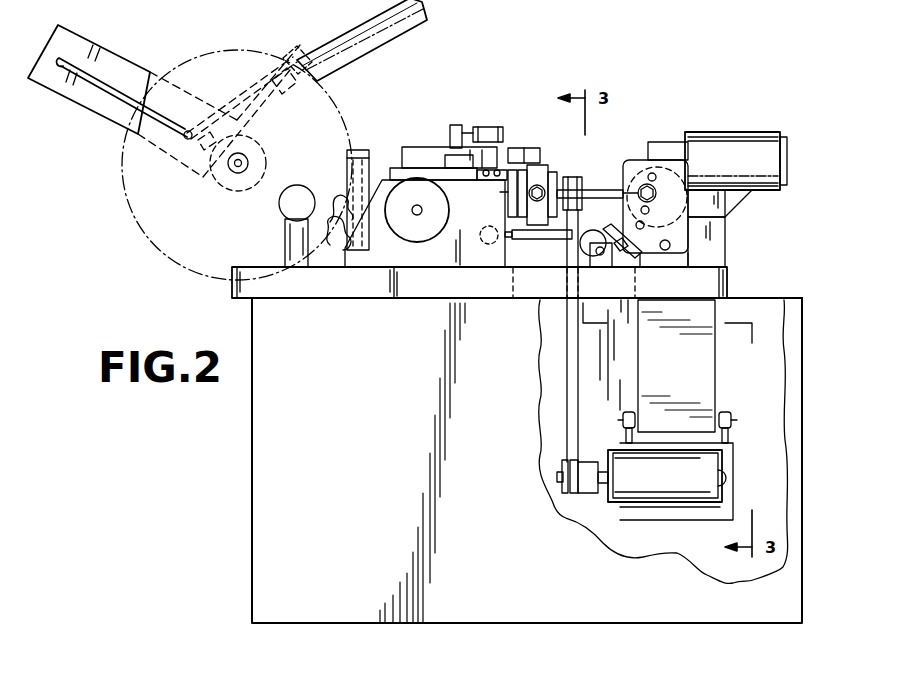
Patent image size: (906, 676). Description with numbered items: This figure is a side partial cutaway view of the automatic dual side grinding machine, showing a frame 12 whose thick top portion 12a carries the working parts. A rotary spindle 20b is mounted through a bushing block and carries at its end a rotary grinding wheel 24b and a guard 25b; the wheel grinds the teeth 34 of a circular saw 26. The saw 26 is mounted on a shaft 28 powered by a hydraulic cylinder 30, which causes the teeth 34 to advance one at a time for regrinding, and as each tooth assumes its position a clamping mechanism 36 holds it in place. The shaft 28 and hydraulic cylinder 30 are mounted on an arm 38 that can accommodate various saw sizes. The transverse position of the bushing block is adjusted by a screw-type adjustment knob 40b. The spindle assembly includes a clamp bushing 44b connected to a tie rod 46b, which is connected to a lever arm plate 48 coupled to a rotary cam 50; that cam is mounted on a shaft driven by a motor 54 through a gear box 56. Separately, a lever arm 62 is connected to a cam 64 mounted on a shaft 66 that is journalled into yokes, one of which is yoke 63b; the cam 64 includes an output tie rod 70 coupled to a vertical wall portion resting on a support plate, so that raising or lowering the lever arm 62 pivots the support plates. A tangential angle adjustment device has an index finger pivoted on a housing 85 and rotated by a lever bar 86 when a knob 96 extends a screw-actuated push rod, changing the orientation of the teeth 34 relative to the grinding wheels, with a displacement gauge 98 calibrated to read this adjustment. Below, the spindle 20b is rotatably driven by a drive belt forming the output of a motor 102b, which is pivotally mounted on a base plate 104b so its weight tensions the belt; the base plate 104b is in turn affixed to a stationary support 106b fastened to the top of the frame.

The frame 12 is at (418, 455).
The top portion 12a is at (422, 282).
The rotary spindle 20b is at (557, 187).
The rotary grinding wheel 24b is at (342, 165).
The guard 25b is at (372, 153).
The circular saw 26 is at (173, 60).
The shaft 28 is at (230, 177).
The hydraulic cylinder 30 is at (383, 8).
The teeth 34 is at (300, 250).
The clamping mechanism 36 is at (288, 205).
The arm 38 is at (148, 72).
The adjustment knob 40b is at (432, 227).
The clamp bushing 44b is at (547, 167).
The tie rod 46b is at (600, 190).
The lever arm plate 48 is at (690, 243).
The rotary cam 50 is at (695, 208).
The motor 54 is at (707, 132).
The gear box 56 is at (670, 140).
The lever arm 62 is at (650, 247).
The yoke 63b is at (633, 245).
The cam 64 is at (603, 237).
The shaft 66 is at (600, 252).
The output tie rod 70 is at (512, 248).
The housing 85 is at (425, 145).
The lever bar 86 is at (457, 123).
The knob 96 is at (515, 148).
The displacement gauge 98 is at (492, 127).
The motor 102b is at (667, 488).
The base plate 104b is at (733, 457).
The stationary support 106b is at (706, 373).